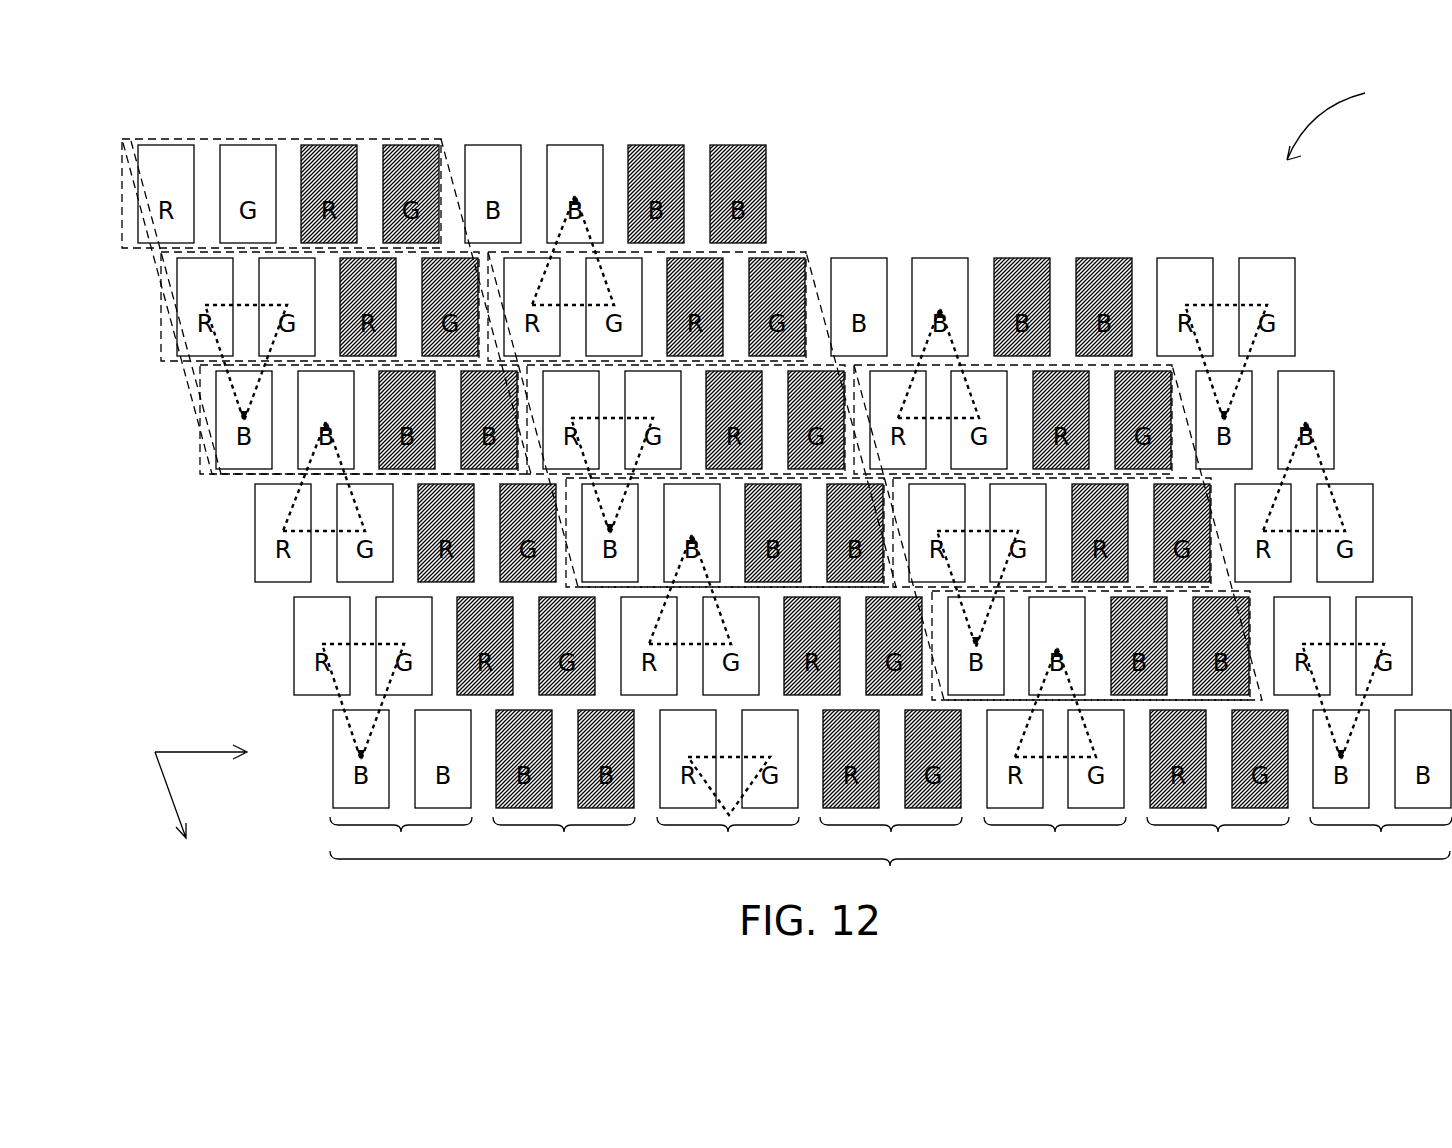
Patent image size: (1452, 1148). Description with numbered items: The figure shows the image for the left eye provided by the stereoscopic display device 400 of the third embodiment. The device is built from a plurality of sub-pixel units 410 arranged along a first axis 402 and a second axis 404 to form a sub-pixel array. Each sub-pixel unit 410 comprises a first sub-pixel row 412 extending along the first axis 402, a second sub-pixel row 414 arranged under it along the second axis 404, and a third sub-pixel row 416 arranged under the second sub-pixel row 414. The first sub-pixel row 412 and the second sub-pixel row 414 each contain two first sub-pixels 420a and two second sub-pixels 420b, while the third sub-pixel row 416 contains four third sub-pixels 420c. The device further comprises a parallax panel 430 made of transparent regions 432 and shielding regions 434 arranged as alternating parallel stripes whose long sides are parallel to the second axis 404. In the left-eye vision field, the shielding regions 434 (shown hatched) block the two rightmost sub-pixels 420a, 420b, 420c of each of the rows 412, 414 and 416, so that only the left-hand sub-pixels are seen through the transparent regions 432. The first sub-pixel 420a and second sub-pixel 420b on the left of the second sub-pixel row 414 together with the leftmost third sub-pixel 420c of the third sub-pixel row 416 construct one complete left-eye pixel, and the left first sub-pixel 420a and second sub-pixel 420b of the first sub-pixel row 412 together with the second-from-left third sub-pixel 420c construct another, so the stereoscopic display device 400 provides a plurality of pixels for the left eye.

The stereoscopic display device 400 is at (1353, 119).
The first axis 402 is at (225, 754).
The second axis 404 is at (185, 815).
The sub-pixel unit 410 is at (290, 139).
The first sub-pixel row 412 is at (377, 139).
The second sub-pixel row 414 is at (172, 312).
The third sub-pixel row 416 is at (203, 420).
The first sub-pixel 420a is at (734, 476).
The second sub-pixel 420b is at (816, 476).
The third sub-pixel 420c is at (833, 476).
The parallax panel 430 is at (890, 872).
The transparent region 432 is at (891, 837).
The shielding region 434 is at (891, 837).